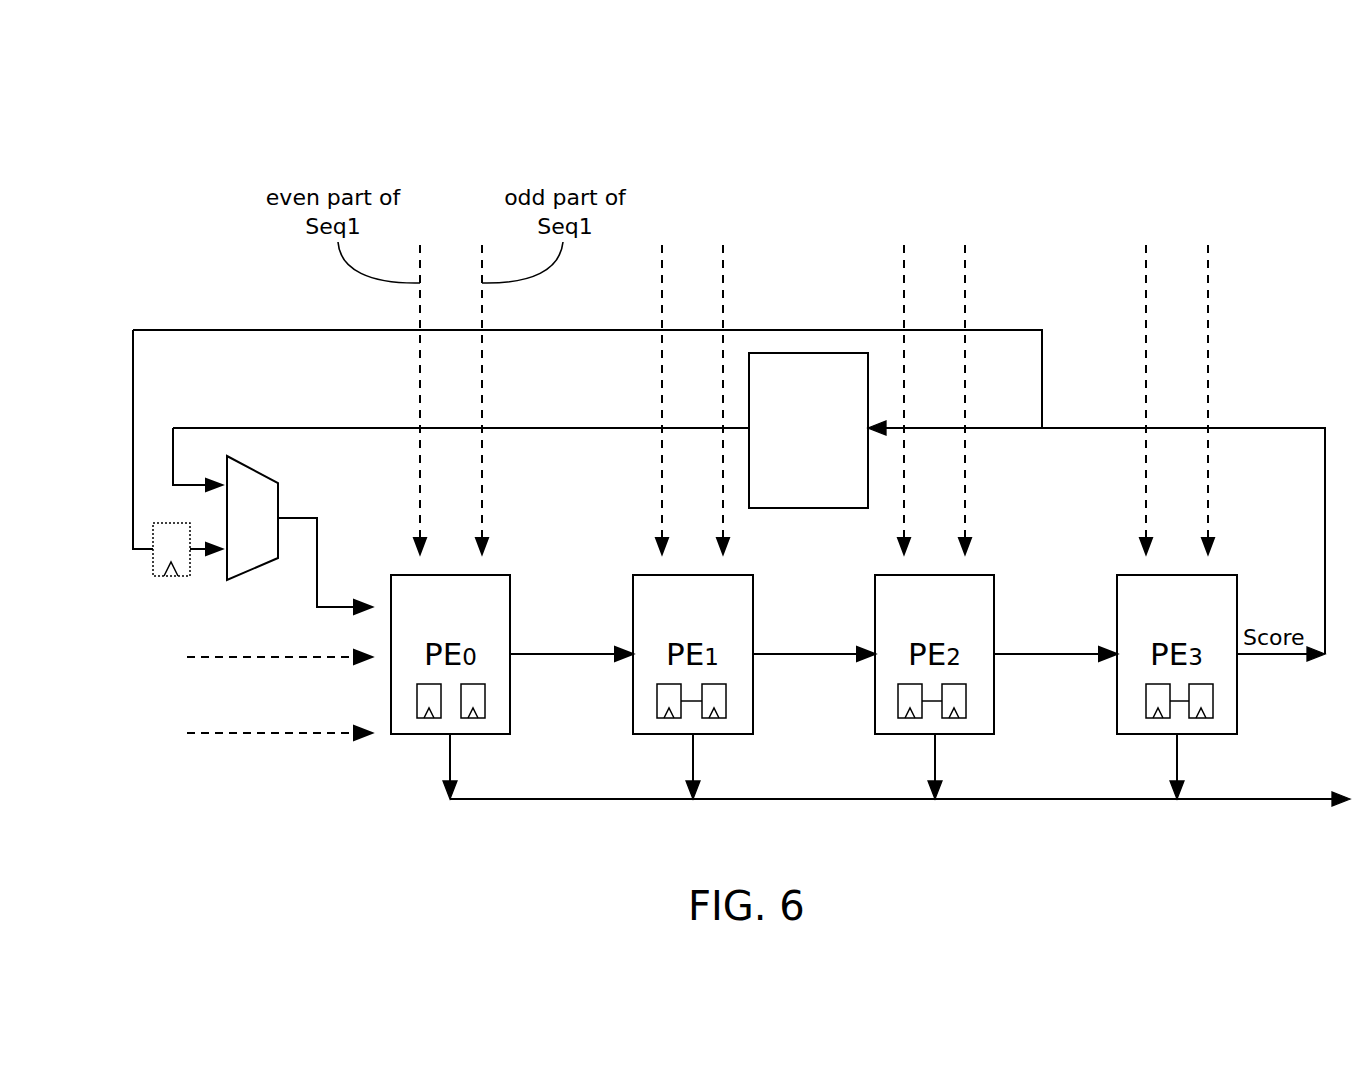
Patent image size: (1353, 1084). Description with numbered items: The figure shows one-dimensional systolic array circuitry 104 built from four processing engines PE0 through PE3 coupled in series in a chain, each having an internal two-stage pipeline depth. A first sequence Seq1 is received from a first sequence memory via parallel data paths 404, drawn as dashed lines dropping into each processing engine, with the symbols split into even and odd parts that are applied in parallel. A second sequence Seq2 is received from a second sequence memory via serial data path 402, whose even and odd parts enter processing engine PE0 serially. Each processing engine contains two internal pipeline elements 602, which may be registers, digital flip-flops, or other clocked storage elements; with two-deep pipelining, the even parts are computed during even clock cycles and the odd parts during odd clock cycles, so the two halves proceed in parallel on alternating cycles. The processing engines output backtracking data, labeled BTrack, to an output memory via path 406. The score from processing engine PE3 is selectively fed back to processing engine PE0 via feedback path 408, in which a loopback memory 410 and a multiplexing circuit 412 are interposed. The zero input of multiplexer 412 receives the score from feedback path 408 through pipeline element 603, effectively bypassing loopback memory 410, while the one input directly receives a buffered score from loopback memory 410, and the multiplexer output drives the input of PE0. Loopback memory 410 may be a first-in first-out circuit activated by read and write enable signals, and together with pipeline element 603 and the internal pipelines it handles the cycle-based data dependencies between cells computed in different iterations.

The systolic array circuitry 104 is at (1210, 137).
The serial data path 402 is at (290, 655).
The parallel data paths 404 is at (904, 262).
The path 406 is at (1277, 800).
The feedback path 408 is at (1262, 428).
The loopback memory 410 is at (805, 508).
The multiplexing circuit 412 is at (278, 492).
The internal pipeline elements 602 is at (473, 718).
The pipeline element 603 is at (153, 566).